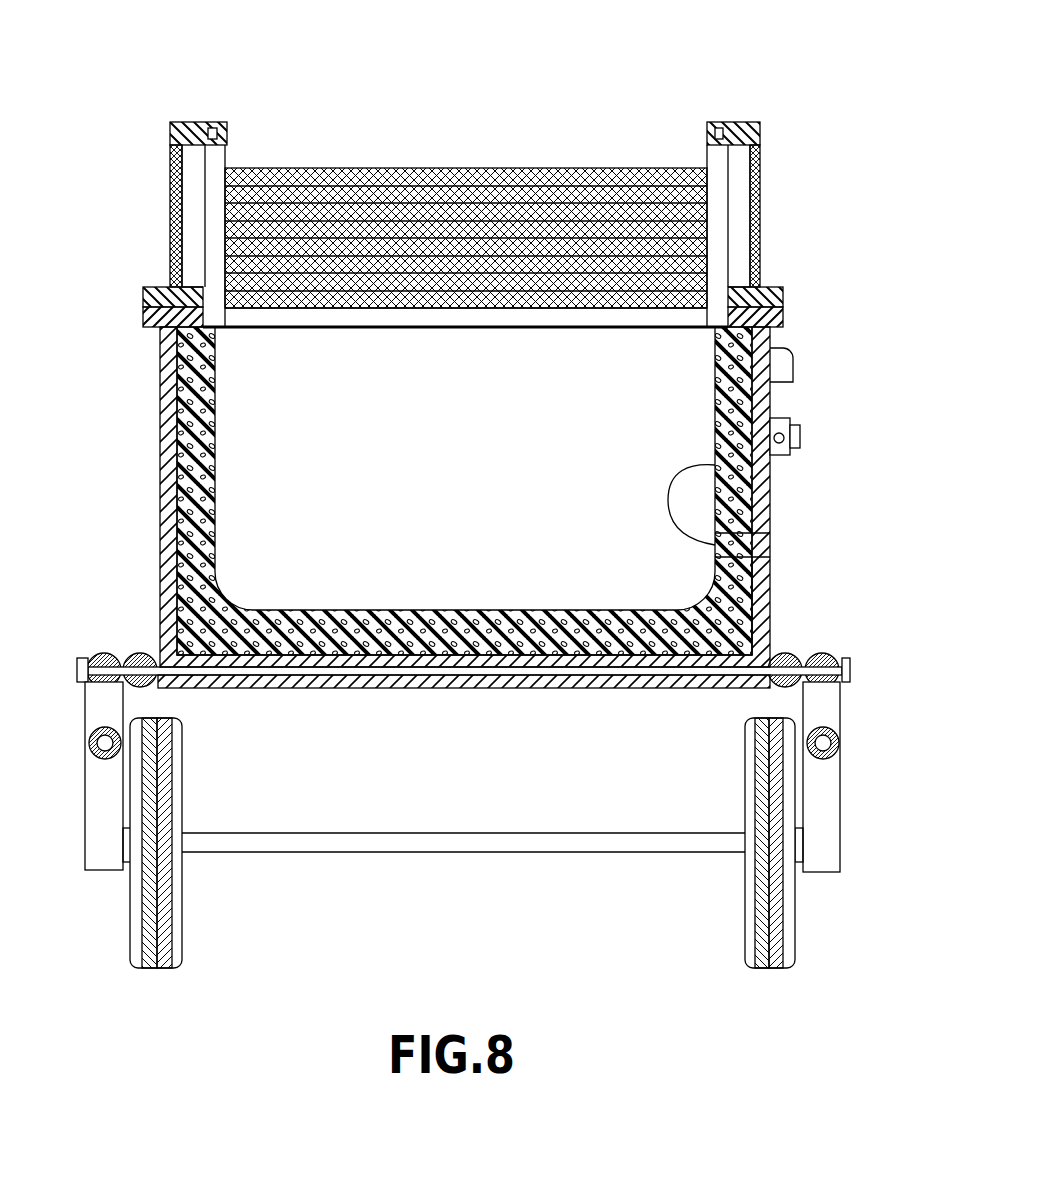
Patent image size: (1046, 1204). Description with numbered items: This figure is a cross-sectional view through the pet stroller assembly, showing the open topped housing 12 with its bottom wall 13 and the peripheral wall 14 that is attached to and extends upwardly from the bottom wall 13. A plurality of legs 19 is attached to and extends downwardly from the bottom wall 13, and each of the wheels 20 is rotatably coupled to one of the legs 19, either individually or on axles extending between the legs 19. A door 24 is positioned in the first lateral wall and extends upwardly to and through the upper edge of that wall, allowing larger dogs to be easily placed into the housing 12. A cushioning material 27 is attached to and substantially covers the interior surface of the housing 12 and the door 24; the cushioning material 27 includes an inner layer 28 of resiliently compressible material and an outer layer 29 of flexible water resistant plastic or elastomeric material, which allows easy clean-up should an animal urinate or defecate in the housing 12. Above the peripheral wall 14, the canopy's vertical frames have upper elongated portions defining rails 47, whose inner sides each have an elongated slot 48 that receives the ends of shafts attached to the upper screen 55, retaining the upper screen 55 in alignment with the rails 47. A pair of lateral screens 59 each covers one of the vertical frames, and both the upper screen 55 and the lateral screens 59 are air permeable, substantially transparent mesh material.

The housing 12 is at (160, 687).
The bottom wall 13 is at (423, 688).
The peripheral wall 14 is at (160, 545).
The legs 19 is at (840, 805).
The wheels 20 is at (770, 968).
The door 24 is at (770, 520).
The cushioning material 27 is at (232, 527).
The inner layer 28 is at (770, 488).
The outer layer 29 is at (770, 570).
The rails 47 is at (190, 122).
The elongated slot 48 is at (218, 133).
The upper screen 55 is at (430, 168).
The lateral screens 59 is at (170, 210).